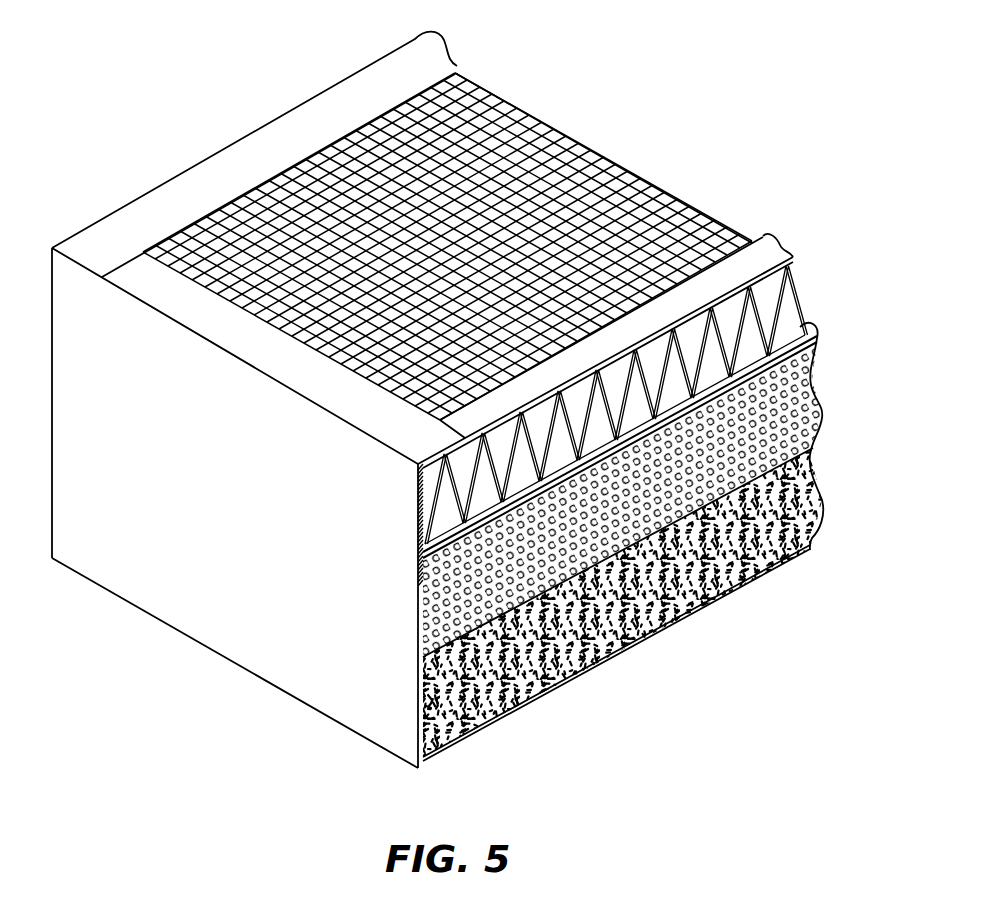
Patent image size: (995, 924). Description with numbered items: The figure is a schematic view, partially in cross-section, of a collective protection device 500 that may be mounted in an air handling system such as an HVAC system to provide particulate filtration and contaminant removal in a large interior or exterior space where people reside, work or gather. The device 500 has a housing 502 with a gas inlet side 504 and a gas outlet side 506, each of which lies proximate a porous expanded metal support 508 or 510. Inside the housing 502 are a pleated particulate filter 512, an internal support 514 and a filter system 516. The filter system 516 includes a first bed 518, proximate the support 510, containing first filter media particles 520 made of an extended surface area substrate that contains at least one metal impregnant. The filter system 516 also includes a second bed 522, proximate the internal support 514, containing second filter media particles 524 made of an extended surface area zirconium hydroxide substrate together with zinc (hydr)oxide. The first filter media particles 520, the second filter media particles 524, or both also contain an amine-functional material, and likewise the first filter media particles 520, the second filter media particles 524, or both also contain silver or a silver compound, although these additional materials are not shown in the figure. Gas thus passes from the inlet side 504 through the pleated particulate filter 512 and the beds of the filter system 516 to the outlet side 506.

The collective protection device 500 is at (556, 62).
The housing 502 is at (325, 90).
The gas inlet side 504 is at (623, 208).
The gas outlet side 506 is at (499, 737).
The porous expanded metal support 508 is at (583, 168).
The porous expanded metal support 510 is at (599, 662).
The pleated particulate filter 512 is at (788, 293).
The internal support 514 is at (815, 338).
The filter system 516 is at (825, 533).
The first bed 518 is at (725, 588).
The first filter media particles 520 is at (425, 704).
The second bed 522 is at (745, 447).
The second filter media particles 524 is at (438, 617).